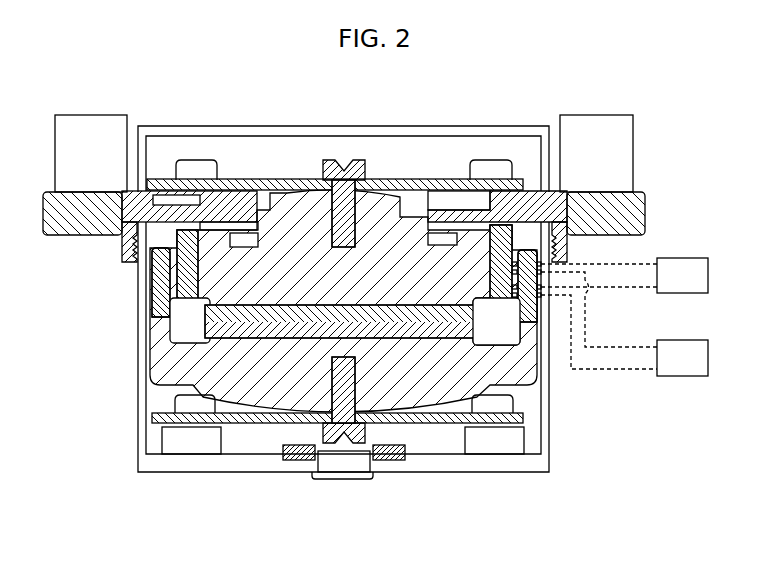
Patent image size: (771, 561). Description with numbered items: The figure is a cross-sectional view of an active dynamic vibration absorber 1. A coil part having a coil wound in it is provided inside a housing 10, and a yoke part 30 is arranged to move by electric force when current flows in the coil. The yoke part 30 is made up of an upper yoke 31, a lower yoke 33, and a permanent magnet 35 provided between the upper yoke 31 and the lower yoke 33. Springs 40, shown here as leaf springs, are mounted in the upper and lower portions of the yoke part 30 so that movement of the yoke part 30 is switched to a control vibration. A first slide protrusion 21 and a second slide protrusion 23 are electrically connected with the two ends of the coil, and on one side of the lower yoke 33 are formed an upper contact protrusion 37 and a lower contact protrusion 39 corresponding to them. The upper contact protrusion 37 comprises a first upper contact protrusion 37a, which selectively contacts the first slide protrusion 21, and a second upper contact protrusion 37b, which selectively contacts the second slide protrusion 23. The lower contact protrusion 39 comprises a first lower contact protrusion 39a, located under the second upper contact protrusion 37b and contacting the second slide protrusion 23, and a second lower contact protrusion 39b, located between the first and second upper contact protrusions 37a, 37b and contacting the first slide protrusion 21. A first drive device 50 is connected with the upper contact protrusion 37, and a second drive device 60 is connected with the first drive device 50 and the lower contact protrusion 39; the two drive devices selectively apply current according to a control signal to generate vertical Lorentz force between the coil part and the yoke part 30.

The active dynamic vibration absorber 1 is at (654, 104).
The housing 10 is at (142, 434).
The first slide protrusion 21 is at (458, 310).
The second slide protrusion 23 is at (519, 290).
The yoke part 30 is at (95, 282).
The upper yoke 31 is at (223, 279).
The lower yoke 33 is at (163, 360).
The permanent magnet 35 is at (223, 322).
The upper contact protrusion 37 is at (677, 140).
The first upper contact protrusion 37a is at (567, 232).
The second upper contact protrusion 37b is at (497, 322).
The lower contact protrusion 39 is at (445, 520).
The first lower contact protrusion 39a is at (537, 280).
The second lower contact protrusion 39b is at (512, 290).
The springs 40 is at (392, 178).
The first drive device 50 is at (709, 273).
The second drive device 60 is at (709, 356).